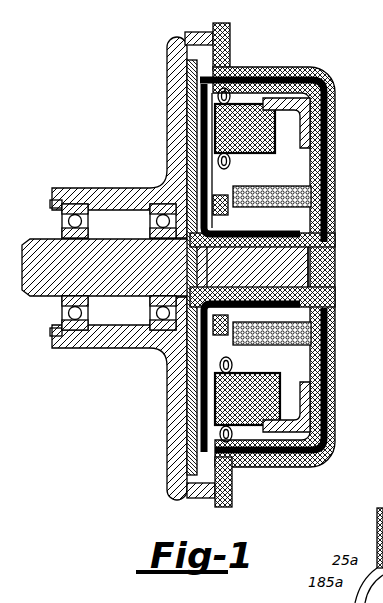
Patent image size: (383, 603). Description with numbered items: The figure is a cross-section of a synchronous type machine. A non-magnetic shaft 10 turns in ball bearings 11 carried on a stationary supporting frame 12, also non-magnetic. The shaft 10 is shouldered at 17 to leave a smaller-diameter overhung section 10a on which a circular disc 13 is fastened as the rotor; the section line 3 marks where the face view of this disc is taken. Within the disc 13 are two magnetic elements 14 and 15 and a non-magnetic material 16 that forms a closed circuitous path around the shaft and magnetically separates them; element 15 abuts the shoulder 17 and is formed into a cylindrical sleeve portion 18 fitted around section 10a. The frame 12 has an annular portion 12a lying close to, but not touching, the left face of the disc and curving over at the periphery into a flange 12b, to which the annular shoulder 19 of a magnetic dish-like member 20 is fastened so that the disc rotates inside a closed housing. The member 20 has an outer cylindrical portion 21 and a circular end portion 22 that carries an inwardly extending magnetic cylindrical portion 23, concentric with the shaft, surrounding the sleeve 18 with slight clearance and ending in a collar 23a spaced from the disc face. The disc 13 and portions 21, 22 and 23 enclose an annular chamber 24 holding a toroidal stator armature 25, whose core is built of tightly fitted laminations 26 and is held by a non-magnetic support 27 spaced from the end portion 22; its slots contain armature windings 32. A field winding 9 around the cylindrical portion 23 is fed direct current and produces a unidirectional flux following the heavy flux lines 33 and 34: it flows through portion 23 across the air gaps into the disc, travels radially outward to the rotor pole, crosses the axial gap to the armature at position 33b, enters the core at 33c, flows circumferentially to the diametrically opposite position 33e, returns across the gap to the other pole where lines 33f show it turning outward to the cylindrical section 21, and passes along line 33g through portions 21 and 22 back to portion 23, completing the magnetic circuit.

The section line 3 is at (190, 61).
The field winding 9 is at (336, 355).
The shaft 10 is at (47, 298).
The overhung shaft section 10a is at (300, 263).
The ball bearings 11 is at (130, 195).
The stationary supporting frame 12 is at (97, 350).
The annular portion 12a is at (180, 430).
The flange 12b is at (190, 28).
The circular disc 13 is at (186, 97).
The magnetic element 14 is at (182, 47).
The magnetic element 15 is at (229, 128).
The non-magnetic material 16 is at (192, 113).
The shoulder 17 is at (140, 295).
The cylindrical sleeve portion 18 is at (312, 238).
The annular shoulder 19 is at (238, 95).
The dish-like member 20 is at (337, 113).
The outer cylindrical portion 21 is at (316, 72).
The circular end portion 22 is at (336, 180).
The cylindrical portion 23 is at (337, 298).
The collar 23a is at (192, 167).
The annular chamber 24 is at (288, 184).
The toroidal stator armature 25 is at (244, 102).
The laminations 26 is at (282, 142).
The support 27 is at (293, 411).
The armature windings 32 is at (235, 366).
The flux line 33 is at (336, 198).
The flux entry position 33b is at (190, 152).
The flux entry position 33c is at (278, 70).
The flux exit position 33e is at (243, 440).
The flux lines 33f is at (192, 452).
The flux line 33g is at (340, 382).
The flux line 34 is at (335, 427).